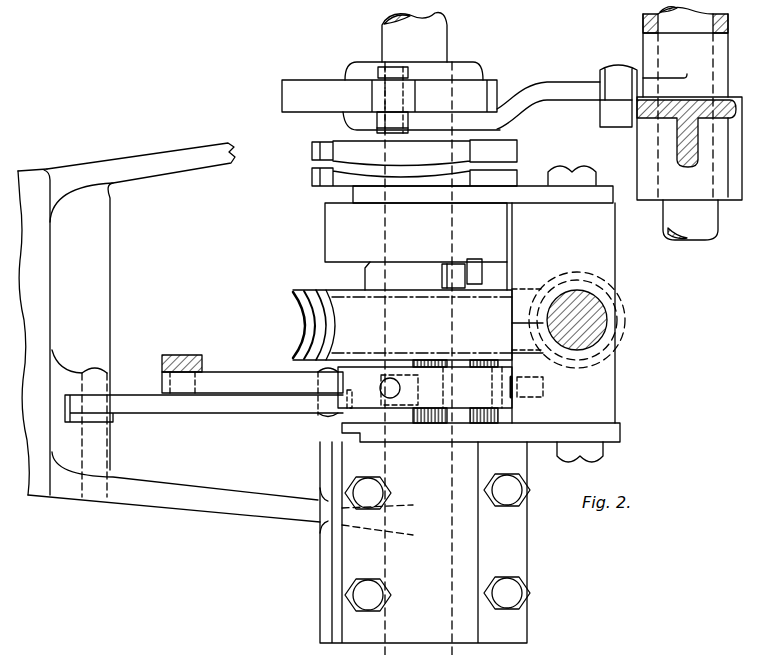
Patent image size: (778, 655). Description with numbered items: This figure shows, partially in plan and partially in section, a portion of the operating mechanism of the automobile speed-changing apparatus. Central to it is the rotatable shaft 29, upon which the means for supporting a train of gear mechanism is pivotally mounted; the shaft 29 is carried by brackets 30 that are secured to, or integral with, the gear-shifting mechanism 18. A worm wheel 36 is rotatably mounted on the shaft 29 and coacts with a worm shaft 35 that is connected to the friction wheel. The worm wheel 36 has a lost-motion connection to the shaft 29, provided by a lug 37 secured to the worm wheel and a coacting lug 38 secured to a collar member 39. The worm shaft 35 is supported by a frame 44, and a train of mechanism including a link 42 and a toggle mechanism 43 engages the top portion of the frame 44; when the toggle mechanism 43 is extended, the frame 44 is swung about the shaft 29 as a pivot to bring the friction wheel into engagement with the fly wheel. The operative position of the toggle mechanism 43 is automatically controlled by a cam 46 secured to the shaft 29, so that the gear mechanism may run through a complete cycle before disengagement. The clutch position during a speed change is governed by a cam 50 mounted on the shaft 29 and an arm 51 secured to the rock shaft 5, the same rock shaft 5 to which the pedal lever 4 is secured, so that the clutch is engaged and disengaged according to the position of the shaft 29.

The pedal lever 4 is at (723, 117).
The rock shaft 5 is at (690, 227).
The gear-shifting mechanism 18 is at (36, 185).
The rotatable shaft 29 is at (437, 49).
The brackets 30 is at (162, 160).
The worm shaft 35 is at (597, 330).
The worm wheel 36 is at (293, 305).
The lug 37 is at (455, 278).
The coacting lug 38 is at (480, 277).
The collar member 39 is at (497, 238).
The link 42 is at (186, 355).
The toggle mechanism 43 is at (250, 368).
The frame 44 is at (612, 413).
The cam 46 is at (347, 420).
The cam 50 is at (322, 80).
The arm 51 is at (546, 91).